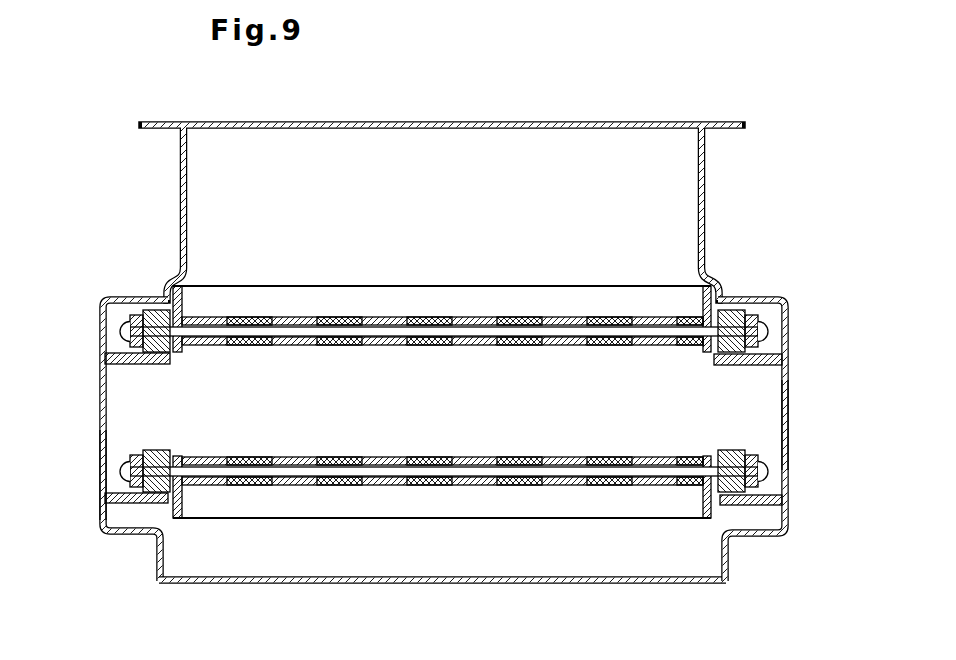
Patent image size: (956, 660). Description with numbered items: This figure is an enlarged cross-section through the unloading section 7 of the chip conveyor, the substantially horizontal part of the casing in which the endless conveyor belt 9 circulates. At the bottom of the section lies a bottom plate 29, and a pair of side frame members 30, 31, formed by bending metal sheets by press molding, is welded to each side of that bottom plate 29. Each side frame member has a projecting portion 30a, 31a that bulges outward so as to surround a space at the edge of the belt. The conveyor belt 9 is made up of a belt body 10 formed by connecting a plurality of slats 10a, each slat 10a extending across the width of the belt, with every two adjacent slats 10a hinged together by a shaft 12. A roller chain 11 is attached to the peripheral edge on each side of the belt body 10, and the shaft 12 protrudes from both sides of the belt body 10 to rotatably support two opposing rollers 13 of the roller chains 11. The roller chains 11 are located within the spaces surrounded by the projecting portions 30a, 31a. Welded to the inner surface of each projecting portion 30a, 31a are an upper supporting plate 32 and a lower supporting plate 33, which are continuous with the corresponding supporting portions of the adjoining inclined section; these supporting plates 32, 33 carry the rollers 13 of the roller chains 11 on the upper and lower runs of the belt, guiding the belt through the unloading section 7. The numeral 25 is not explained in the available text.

The unloading section 7 is at (609, 97).
The conveyor belt 9 is at (463, 281).
The belt body 10 is at (378, 285).
The slats 10a is at (607, 298).
The roller chains 11 is at (148, 307).
The shaft 12 is at (770, 331).
The rollers 13 is at (720, 352).
The upper housing 25 is at (455, 121).
The bottom plate 29 is at (452, 584).
The side frame member 30 is at (101, 339).
The projecting portion 30a is at (98, 502).
The side frame member 31 is at (794, 380).
The projecting portion 31a is at (789, 428).
The upper supporting plate 32 is at (152, 366).
The lower supporting plate 33 is at (158, 504).